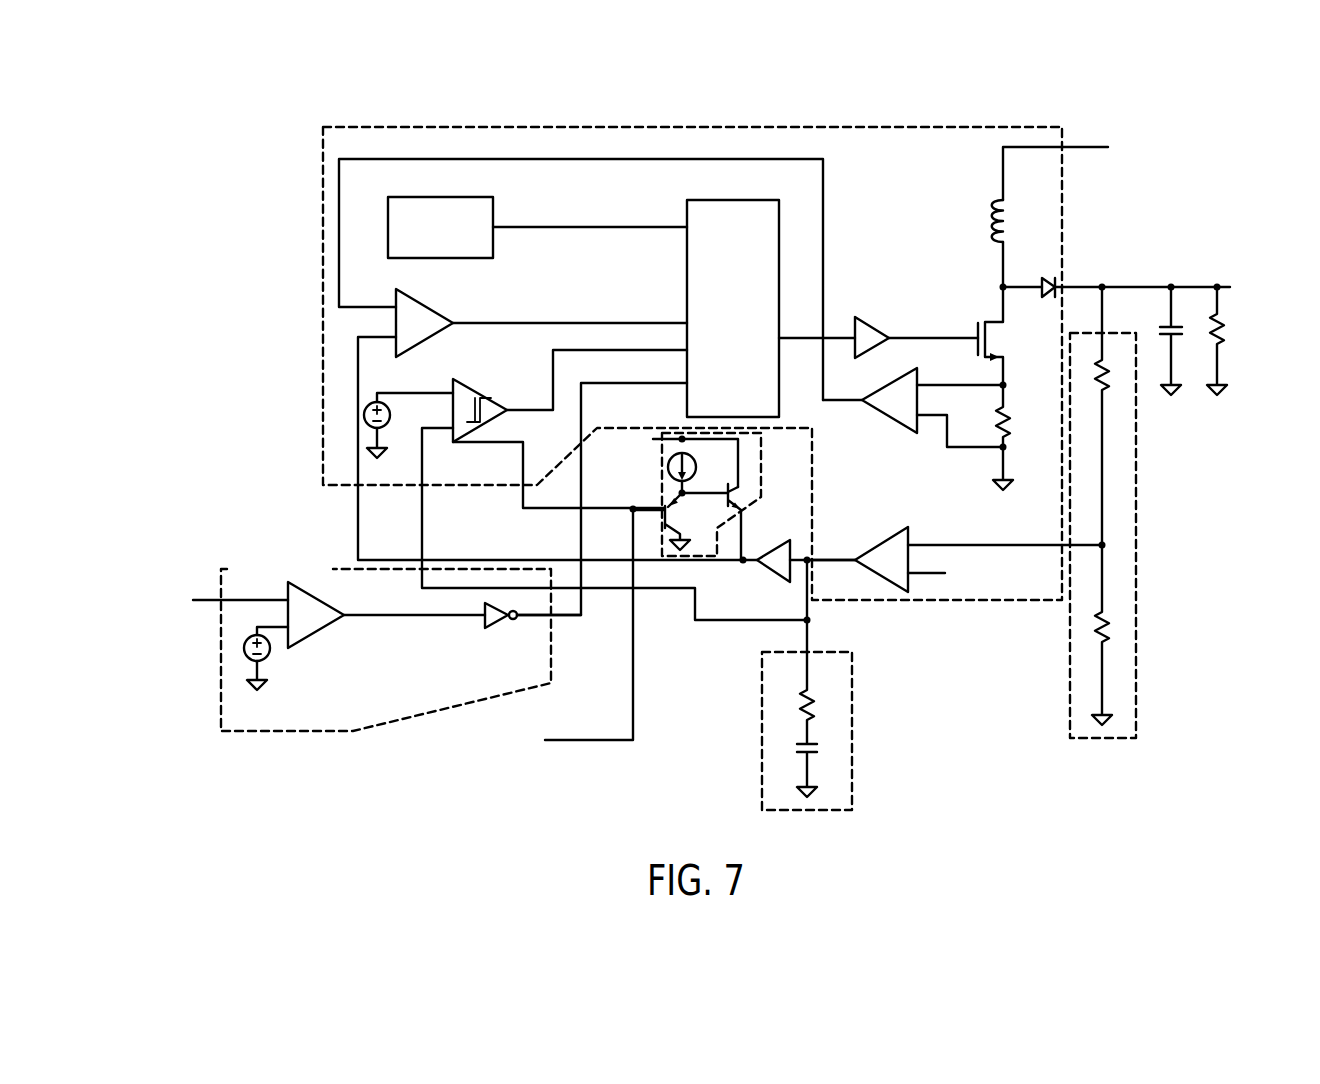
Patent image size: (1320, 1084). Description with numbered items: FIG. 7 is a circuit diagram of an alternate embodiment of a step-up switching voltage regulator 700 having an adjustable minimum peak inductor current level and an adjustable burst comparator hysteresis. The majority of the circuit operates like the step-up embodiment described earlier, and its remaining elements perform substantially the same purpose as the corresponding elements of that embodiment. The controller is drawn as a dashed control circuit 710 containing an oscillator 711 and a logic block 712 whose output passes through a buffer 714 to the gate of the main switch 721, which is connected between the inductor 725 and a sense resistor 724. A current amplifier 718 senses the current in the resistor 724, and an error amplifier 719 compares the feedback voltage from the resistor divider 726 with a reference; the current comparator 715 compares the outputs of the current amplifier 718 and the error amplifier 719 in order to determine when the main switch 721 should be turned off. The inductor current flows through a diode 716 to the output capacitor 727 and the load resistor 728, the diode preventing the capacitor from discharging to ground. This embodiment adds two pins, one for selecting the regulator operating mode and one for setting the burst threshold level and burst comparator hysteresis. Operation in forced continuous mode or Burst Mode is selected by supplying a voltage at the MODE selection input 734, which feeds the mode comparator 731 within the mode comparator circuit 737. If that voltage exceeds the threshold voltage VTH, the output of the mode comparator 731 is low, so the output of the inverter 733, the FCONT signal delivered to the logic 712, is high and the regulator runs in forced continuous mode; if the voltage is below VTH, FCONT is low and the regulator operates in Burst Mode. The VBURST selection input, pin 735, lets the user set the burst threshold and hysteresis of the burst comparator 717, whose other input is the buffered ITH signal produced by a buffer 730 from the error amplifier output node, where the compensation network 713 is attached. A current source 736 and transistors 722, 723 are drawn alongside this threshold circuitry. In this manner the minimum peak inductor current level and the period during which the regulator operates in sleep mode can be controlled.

The regulator 700 is at (975, 793).
The controller 710 is at (318, 414).
The oscillator 711 is at (468, 197).
The logic circuit 712 is at (743, 341).
The compensation network 713 is at (853, 738).
The driver buffer 714 is at (870, 321).
The current comparator 715 is at (438, 308).
The diode 716 is at (1046, 280).
The burst comparator 717 is at (500, 403).
The current amplifier 718 is at (872, 390).
The error amplifier 719 is at (870, 549).
The switching transistor 721 is at (1010, 338).
The transistor 722 is at (684, 515).
The transistor 723 is at (748, 491).
The sense resistor 724 is at (1024, 426).
The inductor 725 is at (988, 219).
The feedback resistor divider 726 is at (1138, 591).
The output capacitor 727 is at (1180, 352).
The load resistor 728 is at (1234, 336).
The buffer 730 is at (765, 572).
The mode comparator 731 is at (321, 631).
The inverter 733 is at (498, 629).
The MODE selection input 734 is at (220, 576).
The pin 735 is at (606, 743).
The current source 736 is at (660, 470).
The mode comparator circuit 737 is at (308, 738).